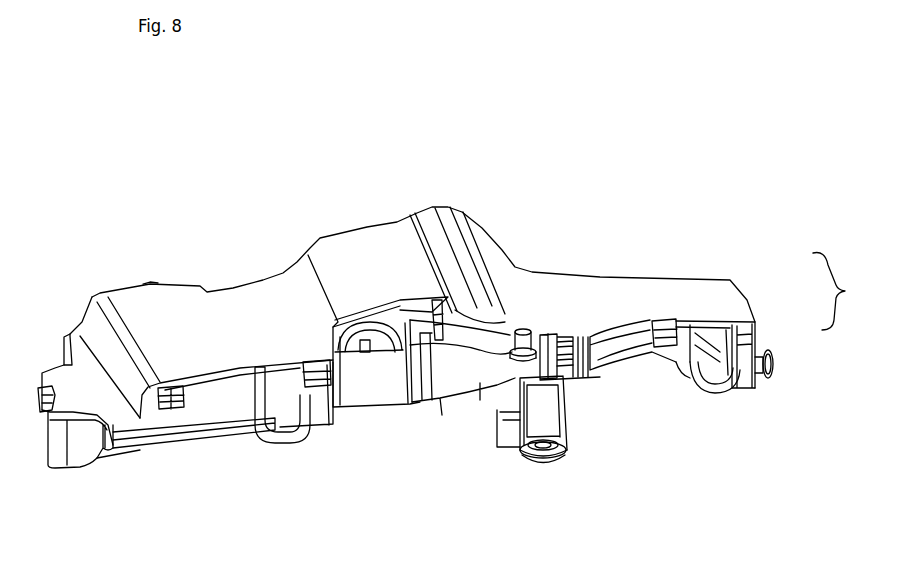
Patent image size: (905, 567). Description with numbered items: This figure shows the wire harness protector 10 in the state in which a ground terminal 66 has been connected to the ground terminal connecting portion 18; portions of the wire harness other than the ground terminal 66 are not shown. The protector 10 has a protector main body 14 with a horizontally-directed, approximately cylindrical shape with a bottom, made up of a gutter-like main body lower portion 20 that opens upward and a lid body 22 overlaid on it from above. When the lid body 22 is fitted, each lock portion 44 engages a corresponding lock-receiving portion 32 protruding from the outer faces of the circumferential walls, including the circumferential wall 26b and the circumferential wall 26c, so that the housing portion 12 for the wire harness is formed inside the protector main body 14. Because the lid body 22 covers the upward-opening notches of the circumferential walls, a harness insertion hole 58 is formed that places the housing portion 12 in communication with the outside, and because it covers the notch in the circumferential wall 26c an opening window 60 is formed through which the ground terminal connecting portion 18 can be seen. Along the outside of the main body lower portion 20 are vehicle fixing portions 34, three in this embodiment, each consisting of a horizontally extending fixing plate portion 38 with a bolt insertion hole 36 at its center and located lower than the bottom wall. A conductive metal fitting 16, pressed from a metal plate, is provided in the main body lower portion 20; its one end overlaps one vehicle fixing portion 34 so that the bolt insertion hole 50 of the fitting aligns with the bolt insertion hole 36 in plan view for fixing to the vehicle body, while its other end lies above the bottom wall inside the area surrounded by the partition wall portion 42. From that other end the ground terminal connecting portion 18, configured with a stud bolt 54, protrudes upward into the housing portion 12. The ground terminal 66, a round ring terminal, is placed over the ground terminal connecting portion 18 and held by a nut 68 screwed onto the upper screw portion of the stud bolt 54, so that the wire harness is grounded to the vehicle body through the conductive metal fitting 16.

The wire harness protector 10 is at (437, 342).
The housing portion 12 is at (507, 343).
The protector main body 14 is at (841, 292).
The conductive metal fitting 16 is at (538, 386).
The ground terminal connecting portion 18 is at (537, 335).
The stud bolt 54 is at (565, 365).
The main body lower portion 20 is at (762, 345).
The lid body 22 is at (745, 290).
The circumferential wall 26b is at (53, 430).
The circumferential wall 26c is at (223, 408).
The lock-receiving portion 32 is at (170, 386).
The vehicle fixing portion 34 is at (563, 477).
The bolt insertion hole 36 is at (533, 455).
The fixing plate portion 38 is at (543, 467).
The partition wall portion 42 is at (508, 333).
The lock portion 44 is at (170, 409).
The bolt insertion hole 50 is at (567, 453).
The harness insertion hole 58 is at (280, 372).
The opening window 60 is at (498, 365).
The ground terminal 66 is at (560, 375).
The nut 68 is at (518, 378).